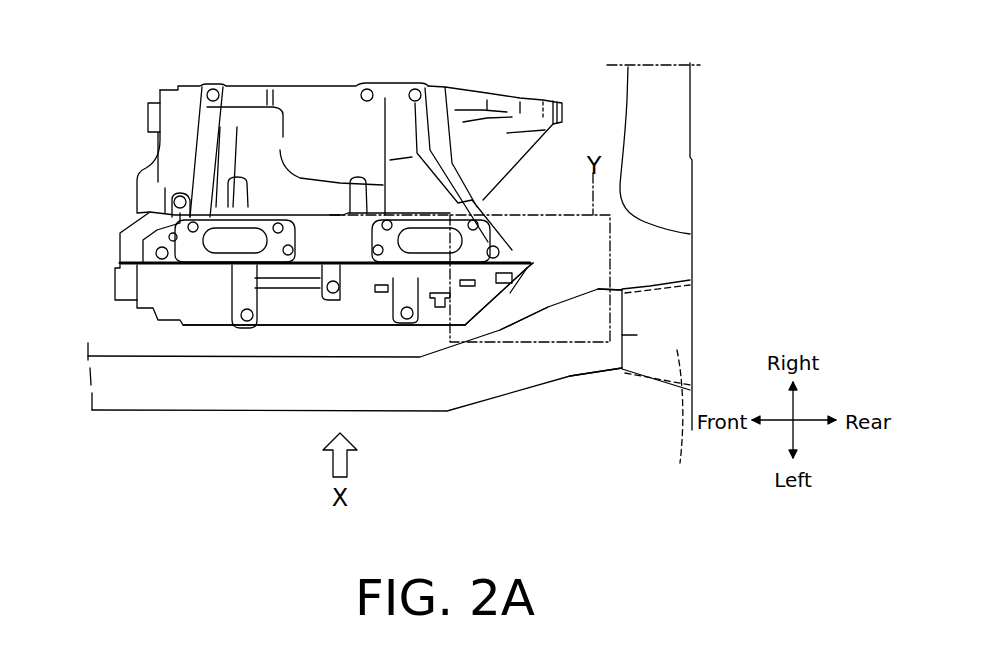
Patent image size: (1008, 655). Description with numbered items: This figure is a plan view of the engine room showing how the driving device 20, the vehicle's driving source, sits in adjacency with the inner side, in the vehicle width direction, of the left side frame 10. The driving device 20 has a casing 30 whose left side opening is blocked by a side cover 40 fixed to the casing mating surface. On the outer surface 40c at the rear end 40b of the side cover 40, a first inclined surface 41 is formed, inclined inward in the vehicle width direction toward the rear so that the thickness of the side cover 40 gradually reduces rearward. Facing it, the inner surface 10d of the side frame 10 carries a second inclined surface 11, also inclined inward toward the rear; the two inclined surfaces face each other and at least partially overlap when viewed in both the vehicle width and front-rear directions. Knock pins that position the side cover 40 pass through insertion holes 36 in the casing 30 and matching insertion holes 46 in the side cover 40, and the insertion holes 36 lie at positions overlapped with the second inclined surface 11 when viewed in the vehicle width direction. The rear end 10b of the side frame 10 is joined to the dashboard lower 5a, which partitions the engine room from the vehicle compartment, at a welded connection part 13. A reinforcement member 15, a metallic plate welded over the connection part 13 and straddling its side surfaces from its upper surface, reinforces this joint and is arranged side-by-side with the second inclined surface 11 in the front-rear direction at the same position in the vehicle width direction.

The dashboard lower 5a is at (745, 269).
The side frame 10 is at (150, 398).
The rear end 10b is at (682, 421).
The inner surface 10d is at (600, 285).
The second inclined surface 11 is at (553, 297).
The connection part 13 is at (637, 391).
The reinforcement member 15 is at (588, 395).
The driving device 20 is at (463, 81).
The casing 30 is at (137, 192).
The insertion hole 36 is at (500, 222).
The side cover 40 is at (130, 297).
The rear end 40b is at (530, 267).
The outer surface 40c is at (305, 330).
The first inclined surface 41 is at (510, 293).
The insertion hole 46 is at (510, 270).